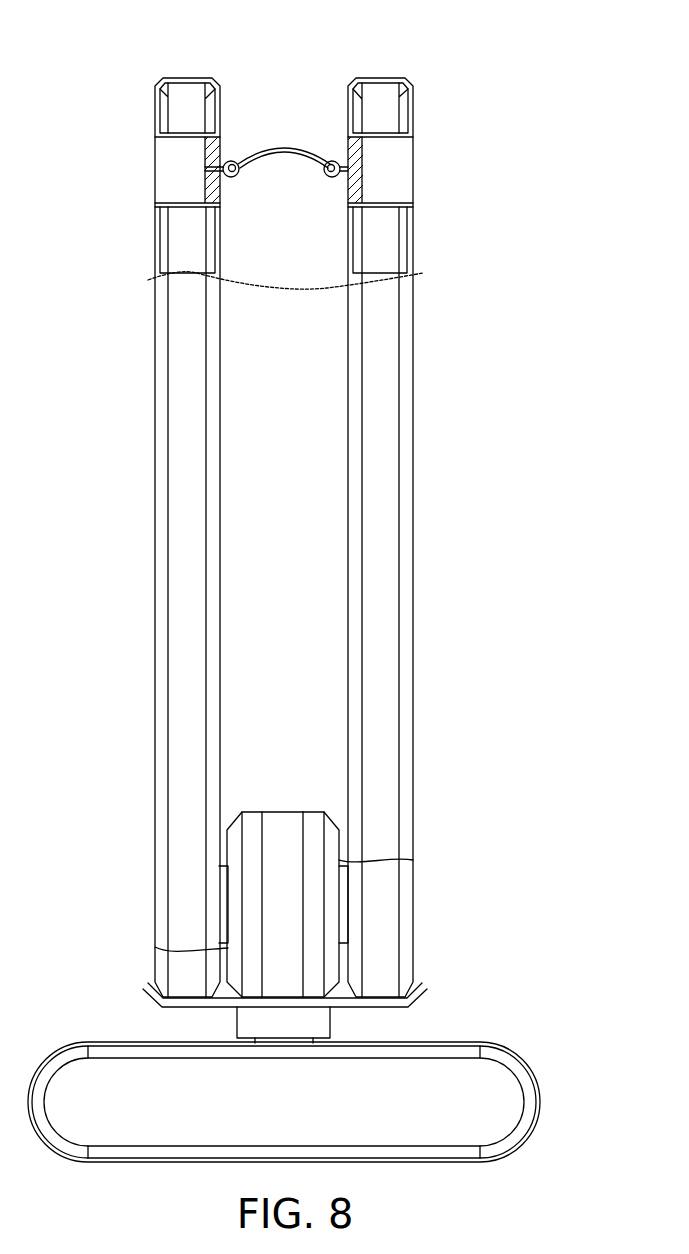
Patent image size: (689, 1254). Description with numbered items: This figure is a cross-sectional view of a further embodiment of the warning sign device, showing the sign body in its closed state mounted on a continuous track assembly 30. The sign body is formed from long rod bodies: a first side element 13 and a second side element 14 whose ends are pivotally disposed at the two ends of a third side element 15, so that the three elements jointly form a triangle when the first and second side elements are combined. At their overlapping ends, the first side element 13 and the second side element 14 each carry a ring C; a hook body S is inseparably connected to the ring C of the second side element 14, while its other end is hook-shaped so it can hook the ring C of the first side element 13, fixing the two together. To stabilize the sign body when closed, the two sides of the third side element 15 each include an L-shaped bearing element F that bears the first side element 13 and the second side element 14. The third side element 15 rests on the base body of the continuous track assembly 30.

The first side element 13 is at (407, 85).
The second side element 14 is at (196, 84).
The third side element 15 is at (282, 823).
The continuous track assembly 30 is at (517, 1048).
The hook body S is at (282, 150).
The ring C is at (233, 160).
The bearing element F is at (139, 993).